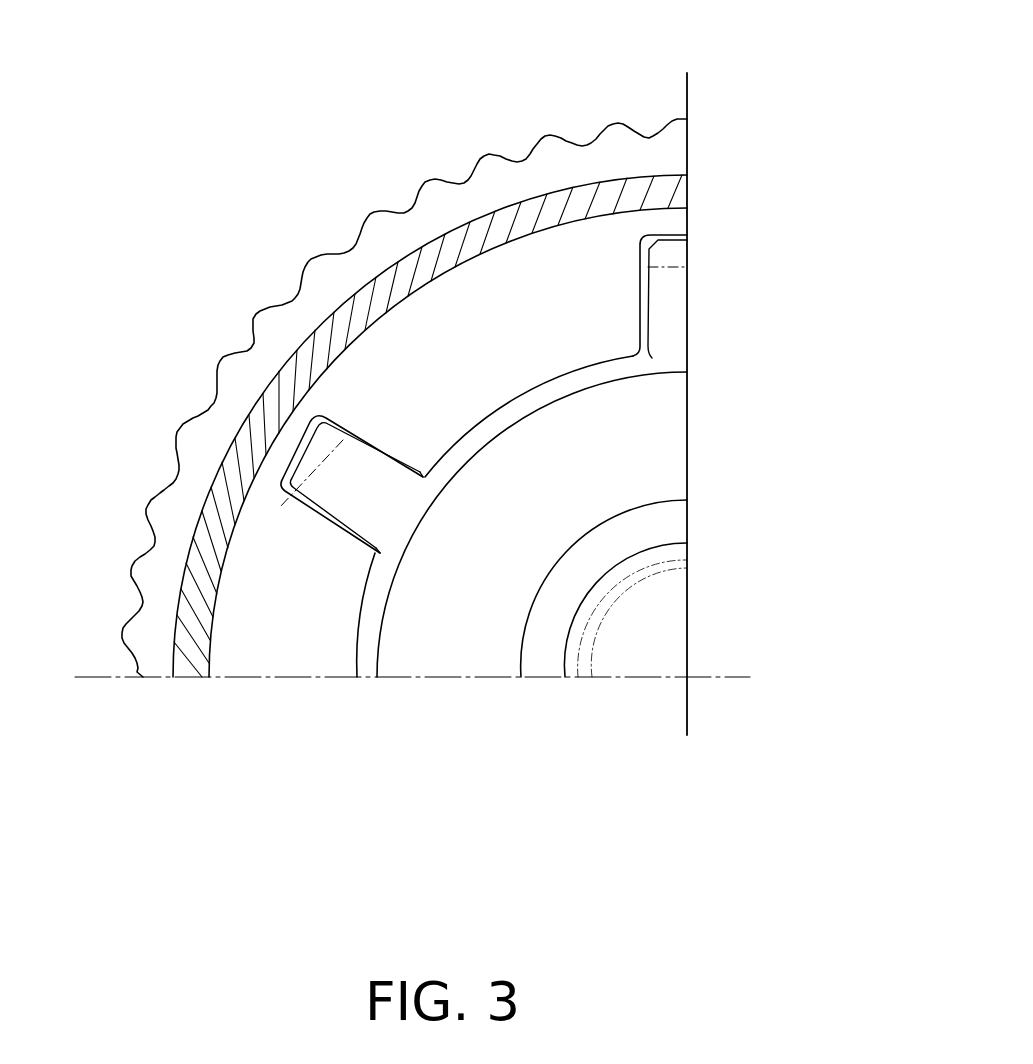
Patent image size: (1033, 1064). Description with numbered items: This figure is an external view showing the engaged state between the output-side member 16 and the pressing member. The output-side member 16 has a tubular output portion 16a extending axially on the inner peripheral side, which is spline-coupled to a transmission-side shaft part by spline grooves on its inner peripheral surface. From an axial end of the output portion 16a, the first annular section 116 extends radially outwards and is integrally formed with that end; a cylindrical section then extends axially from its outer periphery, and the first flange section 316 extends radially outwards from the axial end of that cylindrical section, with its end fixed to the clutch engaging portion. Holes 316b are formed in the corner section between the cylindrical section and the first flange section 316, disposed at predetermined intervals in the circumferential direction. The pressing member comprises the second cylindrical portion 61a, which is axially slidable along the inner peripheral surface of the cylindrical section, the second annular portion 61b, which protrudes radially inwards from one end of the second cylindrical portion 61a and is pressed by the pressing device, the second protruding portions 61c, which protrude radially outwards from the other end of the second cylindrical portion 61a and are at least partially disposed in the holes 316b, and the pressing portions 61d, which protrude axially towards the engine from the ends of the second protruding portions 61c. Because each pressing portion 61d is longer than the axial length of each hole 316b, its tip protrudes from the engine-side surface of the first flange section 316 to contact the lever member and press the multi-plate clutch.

The output-side member 16 is at (437, 102).
The output portion 16a is at (683, 550).
The second cylindrical portion 61a is at (500, 425).
The second annular portion 61b is at (485, 663).
The second protruding portion 61c is at (372, 542).
The pressing portion 61d is at (303, 477).
The first annular section 116 is at (550, 672).
The first flange section 316 is at (317, 692).
The hole 316b is at (345, 503).